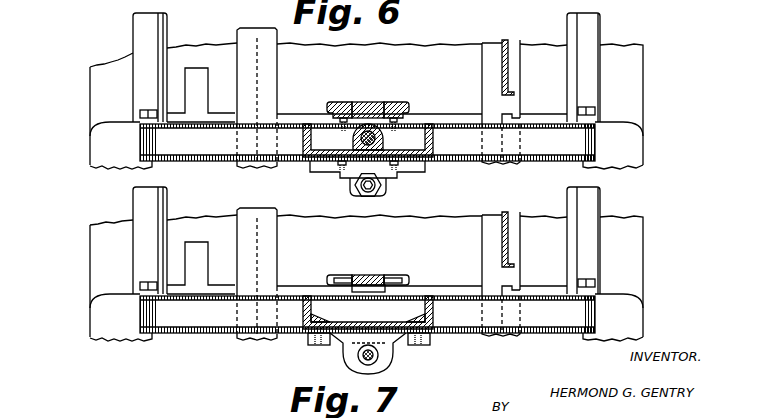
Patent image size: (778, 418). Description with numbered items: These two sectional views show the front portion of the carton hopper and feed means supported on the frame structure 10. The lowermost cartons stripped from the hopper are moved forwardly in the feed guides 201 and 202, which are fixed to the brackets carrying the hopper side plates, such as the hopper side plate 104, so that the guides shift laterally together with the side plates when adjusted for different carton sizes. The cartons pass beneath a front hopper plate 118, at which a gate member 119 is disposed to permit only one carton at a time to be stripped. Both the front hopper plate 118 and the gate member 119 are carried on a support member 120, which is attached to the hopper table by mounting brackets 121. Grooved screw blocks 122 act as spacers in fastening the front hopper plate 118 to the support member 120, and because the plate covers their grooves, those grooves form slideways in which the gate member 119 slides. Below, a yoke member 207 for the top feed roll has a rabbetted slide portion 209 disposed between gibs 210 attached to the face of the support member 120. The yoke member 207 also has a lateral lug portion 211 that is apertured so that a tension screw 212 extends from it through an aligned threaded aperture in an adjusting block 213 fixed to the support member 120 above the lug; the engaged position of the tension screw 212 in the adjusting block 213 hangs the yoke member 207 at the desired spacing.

In FIG. 6, the frame structure 10 is at (655, 153).
In FIG. 7, the frame structure 10 is at (656, 316).
In FIG. 6, the hopper side plate 104 is at (518, 40).
In FIG. 7, the hopper side plate 104 is at (518, 212).
In FIG. 6, the front hopper plate 118 is at (366, 100).
In FIG. 7, the front hopper plate 118 is at (390, 275).
In FIG. 6, the gate member 119 is at (378, 100).
In FIG. 7, the gate member 119 is at (365, 275).
In FIG. 6, the support member 120 is at (433, 132).
In FIG. 7, the support member 120 is at (433, 306).
In FIG. 6, the mounting bracket 121 is at (140, 85).
In FIG. 7, the mounting bracket 121 is at (145, 250).
In FIG. 6, the grooved screw block 122 is at (347, 100).
In FIG. 7, the grooved screw block 122 is at (345, 275).
In FIG. 6, the feed guide 201 is at (237, 40).
In FIG. 7, the feed guide 201 is at (237, 216).
In FIG. 6, the feed guide 202 is at (520, 108).
In FIG. 7, the feed guide 202 is at (519, 285).
In FIG. 6, the yoke member 207 is at (392, 184).
In FIG. 7, the rabbetted slide portion 209 is at (341, 348).
In FIG. 7, the gib 210 is at (310, 346).
In FIG. 7, the lateral lug portion 211 is at (393, 368).
In FIG. 6, the tension screw 212 is at (382, 192).
In FIG. 6, the adjusting block 213 is at (356, 192).